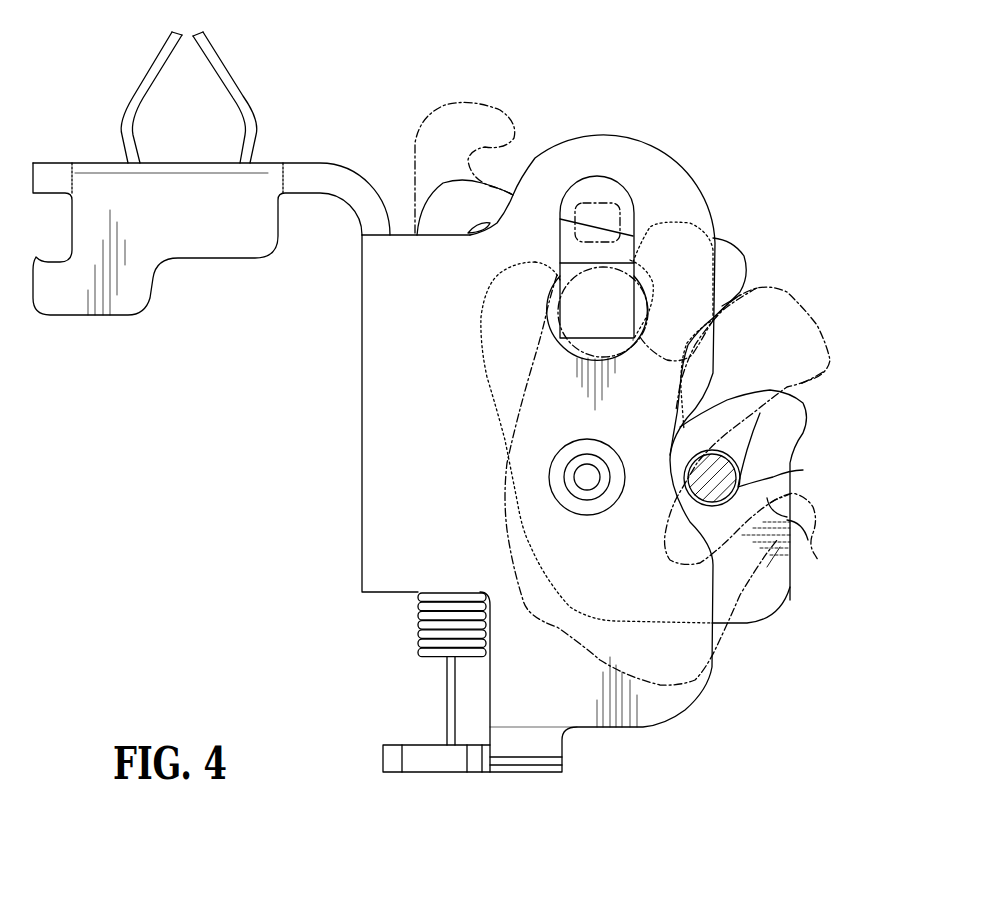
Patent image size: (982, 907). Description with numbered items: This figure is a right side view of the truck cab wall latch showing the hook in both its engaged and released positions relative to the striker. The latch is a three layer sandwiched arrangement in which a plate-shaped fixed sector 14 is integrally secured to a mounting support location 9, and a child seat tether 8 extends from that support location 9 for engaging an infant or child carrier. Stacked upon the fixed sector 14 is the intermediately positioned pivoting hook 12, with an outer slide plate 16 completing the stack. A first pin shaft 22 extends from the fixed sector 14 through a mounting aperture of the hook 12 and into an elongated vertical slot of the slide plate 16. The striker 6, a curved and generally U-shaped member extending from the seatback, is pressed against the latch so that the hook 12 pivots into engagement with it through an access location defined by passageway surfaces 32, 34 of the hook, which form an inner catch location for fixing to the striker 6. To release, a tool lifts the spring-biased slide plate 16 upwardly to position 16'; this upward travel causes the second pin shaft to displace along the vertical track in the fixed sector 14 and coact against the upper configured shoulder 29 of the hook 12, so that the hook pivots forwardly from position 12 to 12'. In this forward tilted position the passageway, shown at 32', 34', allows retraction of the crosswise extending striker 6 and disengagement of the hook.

The striker 6 is at (790, 470).
The child seat tether 8 is at (140, 90).
The support location 9 is at (203, 247).
The hook 12 is at (719, 323).
The hook (forwardly pivoted position) 12' is at (756, 411).
The fixed sector 14 is at (601, 146).
The slide plate 16 is at (441, 188).
The slide plate (upwardly displaced position) 16' is at (465, 136).
The first pin shaft 22 is at (587, 507).
The upper configured shoulder 29 is at (545, 292).
The passageway surface 32 is at (721, 427).
The passageway surface (forward tilted position) 32' is at (790, 533).
The passageway surface 34 is at (775, 280).
The passageway surface (forward tilted position) 34' is at (843, 364).